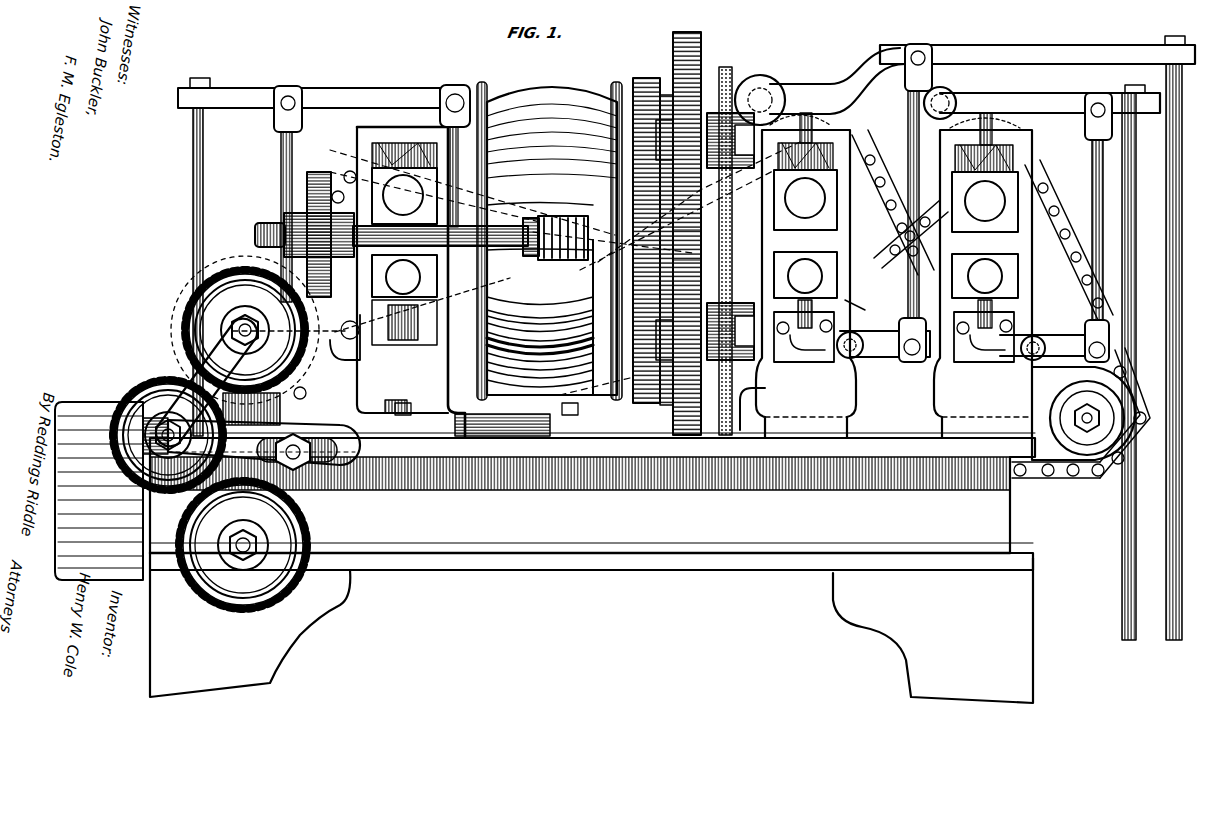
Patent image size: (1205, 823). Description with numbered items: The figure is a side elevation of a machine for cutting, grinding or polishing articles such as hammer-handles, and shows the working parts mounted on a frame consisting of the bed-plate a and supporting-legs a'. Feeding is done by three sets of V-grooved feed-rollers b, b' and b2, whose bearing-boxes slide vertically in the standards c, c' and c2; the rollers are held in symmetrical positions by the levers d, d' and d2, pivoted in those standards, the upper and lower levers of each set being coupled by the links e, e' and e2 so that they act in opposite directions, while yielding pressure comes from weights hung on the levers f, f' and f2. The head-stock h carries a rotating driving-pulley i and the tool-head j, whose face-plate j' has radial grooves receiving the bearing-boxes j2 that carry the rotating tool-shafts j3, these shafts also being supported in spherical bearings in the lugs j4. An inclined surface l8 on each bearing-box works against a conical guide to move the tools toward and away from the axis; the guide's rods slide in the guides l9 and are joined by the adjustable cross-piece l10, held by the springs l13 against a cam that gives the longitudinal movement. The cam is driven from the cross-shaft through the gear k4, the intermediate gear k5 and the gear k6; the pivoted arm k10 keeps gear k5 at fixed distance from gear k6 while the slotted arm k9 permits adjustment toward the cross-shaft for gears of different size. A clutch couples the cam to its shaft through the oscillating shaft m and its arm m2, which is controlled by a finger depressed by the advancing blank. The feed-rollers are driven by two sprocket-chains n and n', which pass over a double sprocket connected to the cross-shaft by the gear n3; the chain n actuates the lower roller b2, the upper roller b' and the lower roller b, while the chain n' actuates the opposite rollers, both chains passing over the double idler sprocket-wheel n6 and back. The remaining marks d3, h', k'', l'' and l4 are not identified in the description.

The bed-plate a is at (592, 501).
The supporting-legs a' is at (591, 630).
The feed-rollers b is at (985, 235).
The feed-rollers b' is at (805, 234).
The feed-rollers b2 is at (404, 232).
The standards c is at (990, 286).
The standards c' is at (813, 275).
The standards c2 is at (350, 124).
The levers d is at (1029, 223).
The levers d' is at (965, 192).
The levers d2 is at (352, 92).
The shaft line d3 is at (332, 352).
The link e is at (1103, 230).
The link e' is at (901, 204).
The link e2 is at (281, 172).
The lever f is at (1134, 366).
The lever f' is at (1166, 352).
The lever f2 is at (192, 222).
The head-stock h is at (531, 241).
The rod h' is at (863, 301).
The driving-pulley i is at (552, 241).
The tool-head j is at (695, 244).
The face-plate j' is at (694, 232).
The bearing-boxes j2 is at (664, 240).
The tool-shafts j3 is at (718, 110).
The lugs j4 is at (733, 88).
The gear k4 is at (243, 545).
The intermediate gear k5 is at (150, 385).
The gear k6 is at (192, 310).
The slotted arm k9 is at (264, 445).
The pivoted arm k10 is at (206, 383).
The drum k'' is at (111, 491).
The link l'' is at (345, 323).
The gear wheel l4 is at (642, 78).
The inclined surface l8 is at (254, 233).
The guides l9 is at (565, 268).
The cross-piece l10 is at (318, 172).
The springs l13 is at (566, 218).
The shaft m is at (514, 420).
The arm m2 is at (750, 392).
The sprocket-chain n is at (982, 225).
The sprocket-chain n' is at (741, 329).
The gear n3 is at (306, 394).
The double idler sprocket-wheel n6 is at (1072, 452).